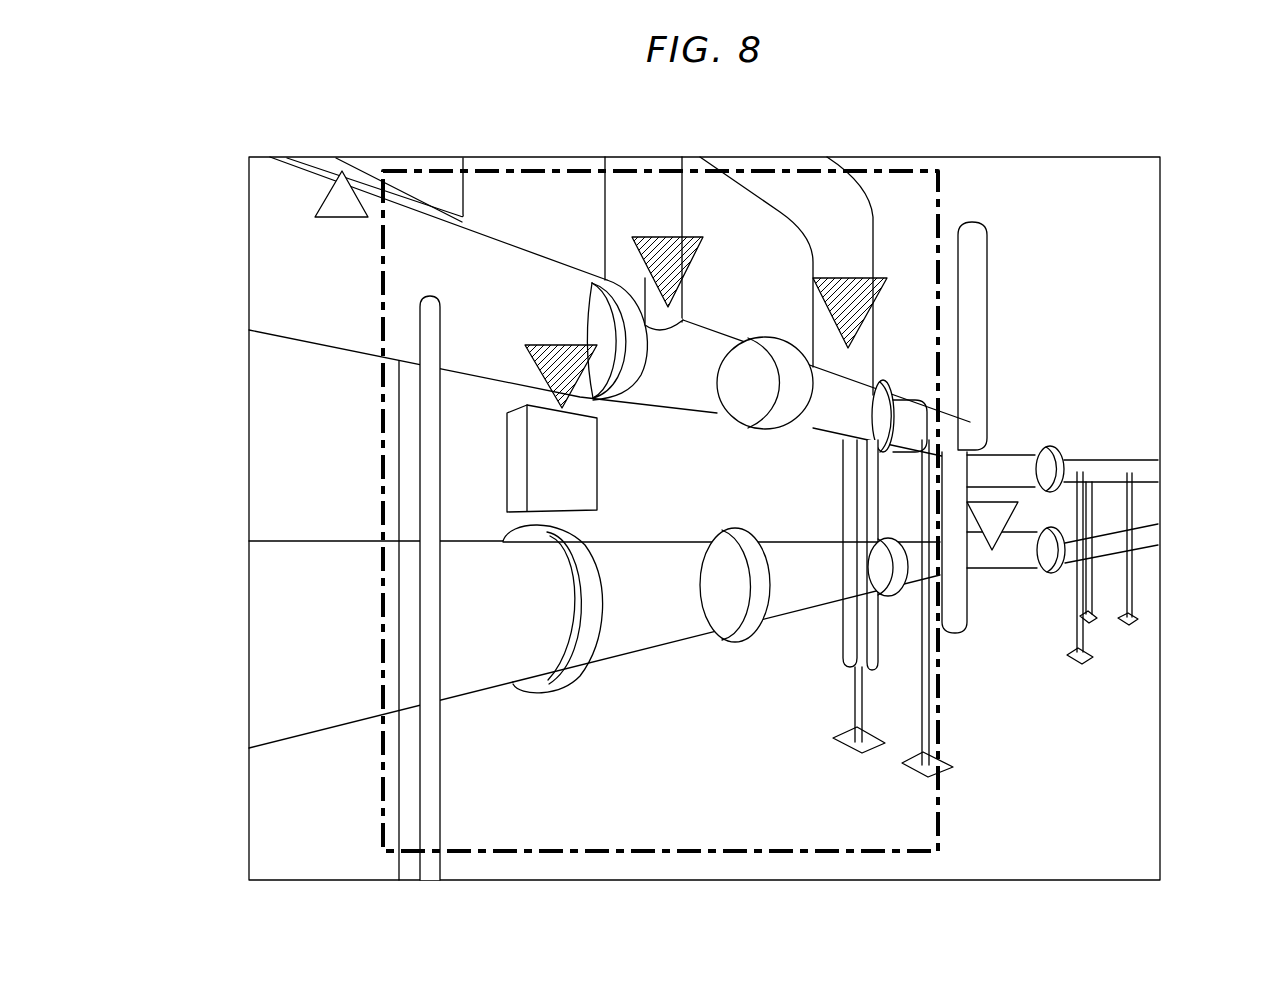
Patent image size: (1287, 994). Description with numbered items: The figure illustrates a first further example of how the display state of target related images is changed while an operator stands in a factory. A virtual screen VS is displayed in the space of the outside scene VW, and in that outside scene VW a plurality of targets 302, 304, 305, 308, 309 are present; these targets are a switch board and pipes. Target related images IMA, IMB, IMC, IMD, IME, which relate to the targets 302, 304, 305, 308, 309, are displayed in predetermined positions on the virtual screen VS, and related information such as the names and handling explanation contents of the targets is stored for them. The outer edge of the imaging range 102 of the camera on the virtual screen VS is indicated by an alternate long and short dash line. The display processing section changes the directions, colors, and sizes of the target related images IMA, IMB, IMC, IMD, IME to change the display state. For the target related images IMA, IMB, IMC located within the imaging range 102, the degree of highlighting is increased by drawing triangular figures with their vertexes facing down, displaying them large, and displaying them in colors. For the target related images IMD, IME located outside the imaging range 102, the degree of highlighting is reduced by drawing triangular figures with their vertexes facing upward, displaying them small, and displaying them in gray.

The imaging range 102 is at (622, 852).
The target 302 is at (545, 467).
The target 304 is at (667, 320).
The target 305 is at (857, 363).
The target 308 is at (783, 597).
The target 309 is at (428, 180).
The target related image IMA is at (668, 237).
The target related image IMB is at (848, 277).
The target related image IMC is at (562, 343).
The target related image IMD is at (322, 190).
The target related image IME is at (993, 497).
The outside scene VW is at (1059, 188).
The virtual screen VS is at (1162, 225).